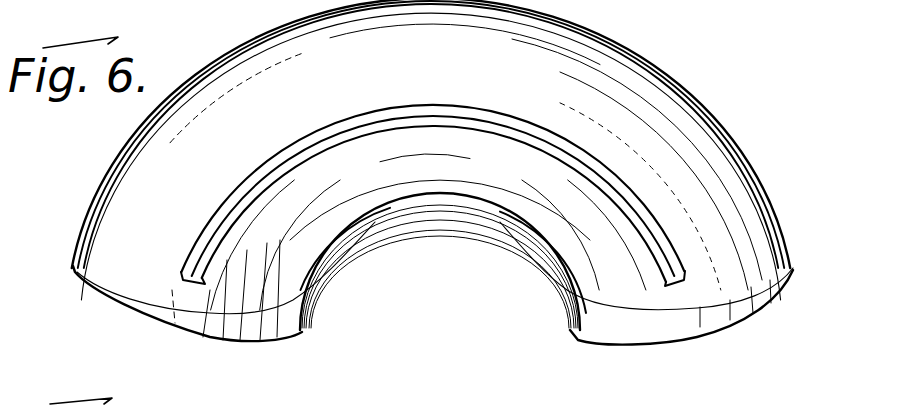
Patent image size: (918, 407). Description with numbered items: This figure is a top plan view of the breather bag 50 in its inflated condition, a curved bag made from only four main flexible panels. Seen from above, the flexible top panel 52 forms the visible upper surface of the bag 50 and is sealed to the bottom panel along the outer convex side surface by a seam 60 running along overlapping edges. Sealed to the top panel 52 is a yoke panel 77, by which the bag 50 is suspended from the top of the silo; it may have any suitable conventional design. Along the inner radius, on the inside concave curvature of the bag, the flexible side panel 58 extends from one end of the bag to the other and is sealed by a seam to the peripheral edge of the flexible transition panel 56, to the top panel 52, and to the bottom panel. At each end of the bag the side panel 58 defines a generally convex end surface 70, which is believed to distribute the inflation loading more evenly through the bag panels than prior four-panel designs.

The breather bag 50 is at (679, 76).
The flexible top panel 52 is at (701, 168).
The flexible transition panel 56 is at (448, 209).
The flexible side panel 58 is at (593, 318).
The seam 60 is at (606, 31).
The convex end surface 70 is at (293, 348).
The yoke panel 77 is at (383, 109).